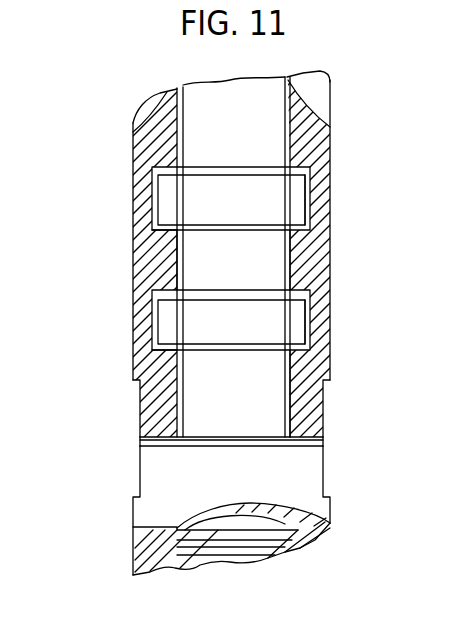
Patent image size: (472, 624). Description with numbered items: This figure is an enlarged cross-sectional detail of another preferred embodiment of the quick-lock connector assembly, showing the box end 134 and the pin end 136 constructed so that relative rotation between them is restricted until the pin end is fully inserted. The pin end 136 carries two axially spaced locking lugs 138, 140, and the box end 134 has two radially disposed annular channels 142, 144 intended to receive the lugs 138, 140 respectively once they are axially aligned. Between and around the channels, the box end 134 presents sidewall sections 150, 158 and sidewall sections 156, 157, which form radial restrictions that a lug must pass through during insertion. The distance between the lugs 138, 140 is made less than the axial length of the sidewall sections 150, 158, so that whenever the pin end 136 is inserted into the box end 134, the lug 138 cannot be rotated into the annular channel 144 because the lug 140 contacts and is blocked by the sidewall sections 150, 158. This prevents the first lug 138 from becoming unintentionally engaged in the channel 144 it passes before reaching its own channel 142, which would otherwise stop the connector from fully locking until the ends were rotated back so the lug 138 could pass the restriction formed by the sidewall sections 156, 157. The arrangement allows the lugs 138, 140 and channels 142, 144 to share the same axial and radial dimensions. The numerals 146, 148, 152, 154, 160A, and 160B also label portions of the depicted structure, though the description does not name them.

The box end 134 is at (145, 148).
The pin end 136 is at (140, 537).
The locking lug 138 is at (152, 188).
The locking lug 140 is at (155, 320).
The annular channel 142 is at (305, 183).
The annular channel 144 is at (303, 310).
The bore wall portion 146 is at (190, 262).
The groove shoulder 148 is at (175, 352).
The sidewall section 150 is at (185, 415).
The end plate 152 is at (218, 429).
The plate edge 154 is at (148, 447).
The sidewall section 156 is at (280, 258).
The sidewall section 157 is at (170, 275).
The sidewall section 158 is at (280, 383).
The upper body section 160A is at (140, 395).
The lower body section 160B is at (133, 483).